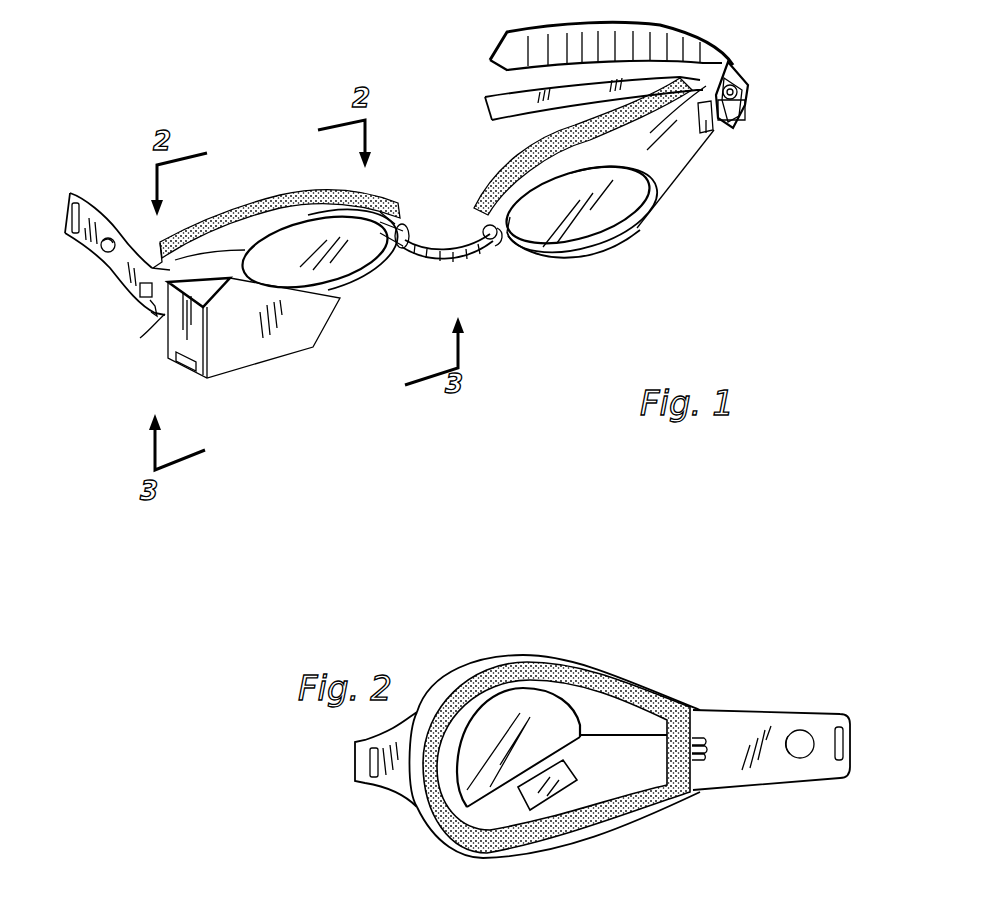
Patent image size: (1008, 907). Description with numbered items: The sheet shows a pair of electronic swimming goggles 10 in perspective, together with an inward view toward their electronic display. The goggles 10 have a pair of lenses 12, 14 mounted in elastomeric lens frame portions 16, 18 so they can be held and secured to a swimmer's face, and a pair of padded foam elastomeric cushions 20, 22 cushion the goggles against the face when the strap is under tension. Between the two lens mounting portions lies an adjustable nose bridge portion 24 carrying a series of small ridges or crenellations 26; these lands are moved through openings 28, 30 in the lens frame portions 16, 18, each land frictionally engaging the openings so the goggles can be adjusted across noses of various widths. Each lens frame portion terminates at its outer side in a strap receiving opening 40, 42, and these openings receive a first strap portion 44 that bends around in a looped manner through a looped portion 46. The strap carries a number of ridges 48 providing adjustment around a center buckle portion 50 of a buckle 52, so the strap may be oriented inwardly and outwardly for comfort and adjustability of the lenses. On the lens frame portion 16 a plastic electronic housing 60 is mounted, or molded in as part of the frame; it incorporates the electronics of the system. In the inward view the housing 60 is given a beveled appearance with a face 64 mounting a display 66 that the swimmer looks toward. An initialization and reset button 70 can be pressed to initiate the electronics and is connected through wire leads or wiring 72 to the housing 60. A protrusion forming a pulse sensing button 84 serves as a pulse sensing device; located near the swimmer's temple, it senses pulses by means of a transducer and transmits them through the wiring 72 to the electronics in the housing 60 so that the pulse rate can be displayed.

In FIG. 1, the goggles 10 is at (665, 230).
In FIG. 1, the lens 12 is at (350, 250).
In FIG. 1, the lens 14 is at (570, 217).
In FIG. 1, the lens frame portion 16 is at (300, 215).
In FIG. 1, the lens frame portion 18 is at (668, 180).
In FIG. 1, the padded foam elastomeric cushion 20 is at (267, 208).
In FIG. 1, the padded foam elastomeric cushion 22 is at (503, 170).
In FIG. 1, the adjustable nose bridge portion 24 is at (464, 257).
In FIG. 1, the crenellations 26 is at (418, 245).
In FIG. 1, the opening 28 is at (522, 262).
In FIG. 1, the opening 30 is at (393, 220).
In FIG. 1, the strap receiving opening 40 is at (160, 313).
In FIG. 1, the strap receiving opening 42 is at (710, 133).
In FIG. 1, the first strap portion 44 is at (93, 207).
In FIG. 1, the looped portion 46 is at (750, 116).
In FIG. 1, the ridges 48 is at (583, 33).
In FIG. 1, the center buckle portion 50 is at (727, 54).
In FIG. 1, the buckle 52 is at (748, 84).
In FIG. 1, the electronic housing 60 is at (290, 340).
In FIG. 2, the electronic housing 60 is at (648, 738).
In FIG. 1, the face 64 is at (188, 373).
In FIG. 2, the face 64 is at (610, 755).
In FIG. 2, the display 66 is at (545, 793).
In FIG. 1, the initialization and reset button 70 is at (103, 248).
In FIG. 2, the wiring 72 is at (710, 737).
In FIG. 2, the pulse sensing button 84 is at (803, 728).